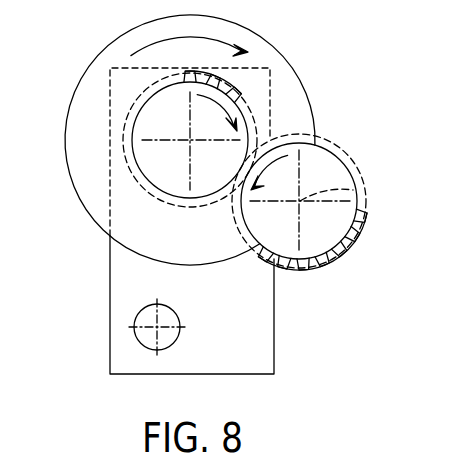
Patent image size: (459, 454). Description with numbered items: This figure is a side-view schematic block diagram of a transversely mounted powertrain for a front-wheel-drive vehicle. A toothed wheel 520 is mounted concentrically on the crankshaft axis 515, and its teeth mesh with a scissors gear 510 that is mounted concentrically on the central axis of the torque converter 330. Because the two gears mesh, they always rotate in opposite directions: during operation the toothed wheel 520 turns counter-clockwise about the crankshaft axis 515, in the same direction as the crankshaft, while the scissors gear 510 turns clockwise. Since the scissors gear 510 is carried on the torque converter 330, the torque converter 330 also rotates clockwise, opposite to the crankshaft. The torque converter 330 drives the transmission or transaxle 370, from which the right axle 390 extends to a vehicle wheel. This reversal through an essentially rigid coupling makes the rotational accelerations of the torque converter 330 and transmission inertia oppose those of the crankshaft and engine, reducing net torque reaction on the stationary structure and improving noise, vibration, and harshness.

The torque converter 330 is at (293, 104).
The transmission or transaxle 370 is at (127, 270).
The right axle 390 is at (140, 318).
The scissors gear 510 is at (163, 108).
The crankshaft axis 515 is at (362, 197).
The toothed wheel 520 is at (330, 167).